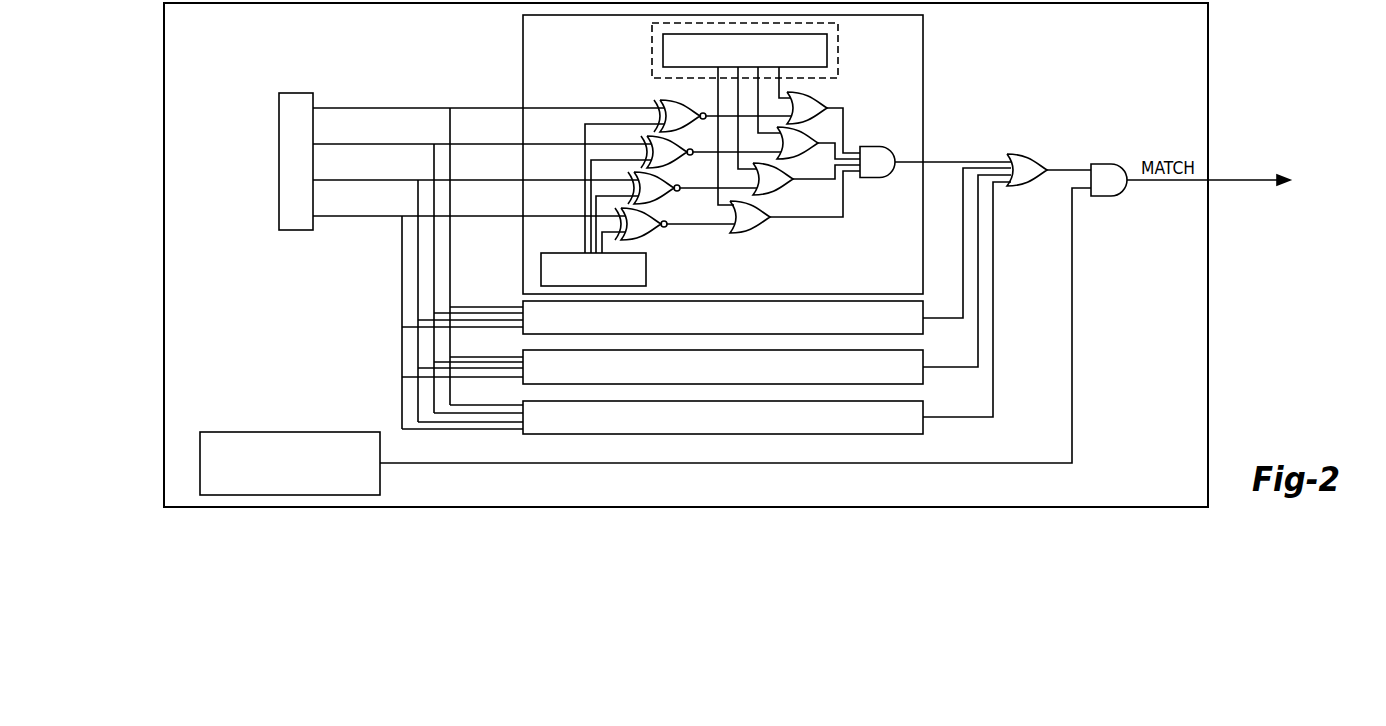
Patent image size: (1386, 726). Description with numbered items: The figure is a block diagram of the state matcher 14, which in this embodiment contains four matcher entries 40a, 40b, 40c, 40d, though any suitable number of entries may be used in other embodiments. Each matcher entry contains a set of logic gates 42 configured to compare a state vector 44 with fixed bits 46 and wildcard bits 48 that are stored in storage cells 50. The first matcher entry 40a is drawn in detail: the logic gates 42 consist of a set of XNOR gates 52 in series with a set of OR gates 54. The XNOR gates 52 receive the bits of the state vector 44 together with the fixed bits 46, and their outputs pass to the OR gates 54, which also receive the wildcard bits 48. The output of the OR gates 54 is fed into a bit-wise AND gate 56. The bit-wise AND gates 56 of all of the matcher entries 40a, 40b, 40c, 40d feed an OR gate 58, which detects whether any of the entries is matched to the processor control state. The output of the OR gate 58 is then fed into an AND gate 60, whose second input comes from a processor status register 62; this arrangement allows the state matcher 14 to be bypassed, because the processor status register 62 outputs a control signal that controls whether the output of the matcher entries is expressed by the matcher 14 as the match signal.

The state matcher 14 is at (1208, 85).
The matcher entry 40a is at (523, 73).
The matcher entry 40b is at (523, 301).
The matcher entry 40c is at (523, 350).
The matcher entry 40d is at (523, 401).
The logic gates 42 is at (770, 241).
The state vector 44 is at (279, 160).
The fixed bits 46 is at (646, 272).
The wildcard bits 48 is at (827, 50).
The storage cells 50 is at (652, 52).
The XNOR gates 52 is at (687, 101).
The OR gates 54 is at (790, 104).
The bit-wise AND gate 56 is at (879, 146).
The OR gate 58 is at (1022, 156).
The AND gate 60 is at (1107, 164).
The processor status register 62 is at (291, 432).